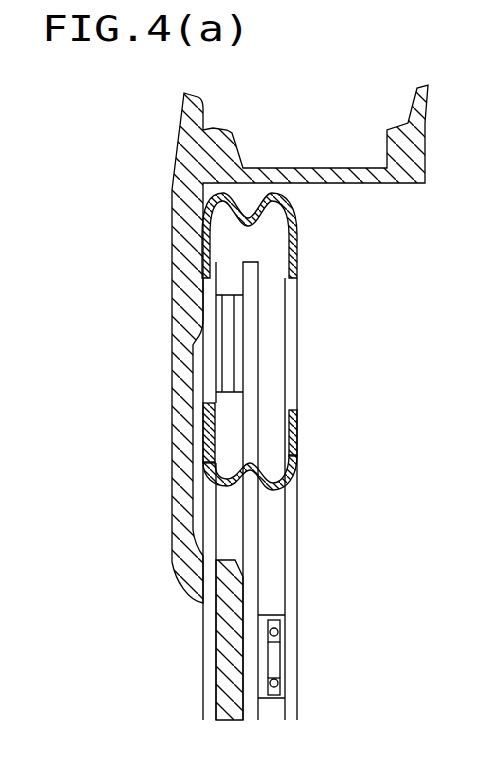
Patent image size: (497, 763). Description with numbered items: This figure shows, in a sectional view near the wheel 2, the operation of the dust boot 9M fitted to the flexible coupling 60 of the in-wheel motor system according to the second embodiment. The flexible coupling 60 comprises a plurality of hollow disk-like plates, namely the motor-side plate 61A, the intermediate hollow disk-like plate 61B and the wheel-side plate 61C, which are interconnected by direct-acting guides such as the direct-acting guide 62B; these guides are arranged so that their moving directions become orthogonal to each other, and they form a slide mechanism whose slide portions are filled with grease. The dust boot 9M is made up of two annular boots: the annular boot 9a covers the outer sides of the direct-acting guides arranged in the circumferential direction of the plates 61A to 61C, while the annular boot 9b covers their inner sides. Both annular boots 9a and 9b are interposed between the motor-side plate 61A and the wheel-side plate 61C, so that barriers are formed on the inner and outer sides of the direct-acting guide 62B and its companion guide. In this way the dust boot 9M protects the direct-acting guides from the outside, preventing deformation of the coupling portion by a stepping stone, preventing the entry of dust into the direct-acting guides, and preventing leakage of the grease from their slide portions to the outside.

The wheel 2 is at (172, 483).
The annular boot 9a is at (297, 255).
The annular boot 9b is at (297, 422).
The dust boot 9M is at (297, 470).
The flexible coupling 60 is at (297, 332).
The motor-side plate 61A is at (280, 288).
The hollow disk-like plate 61B is at (212, 283).
The wheel-side plate 61C is at (203, 385).
The direct-acting guide 62B is at (232, 337).